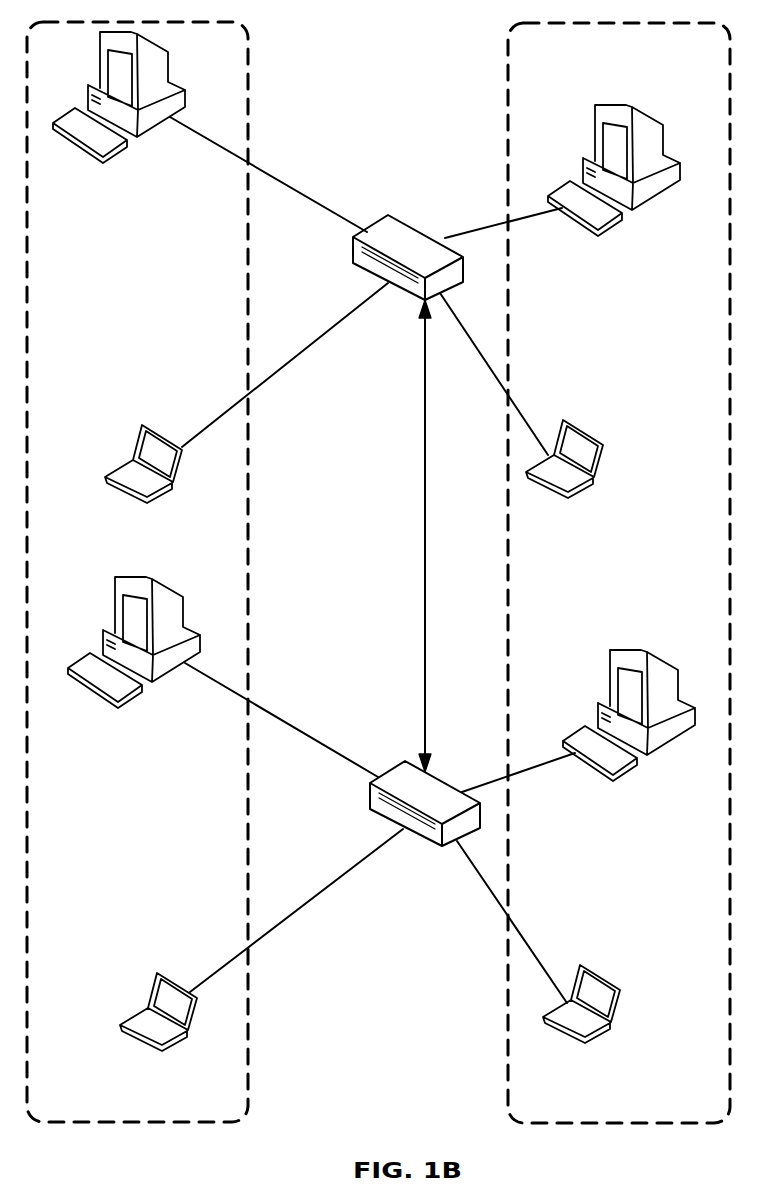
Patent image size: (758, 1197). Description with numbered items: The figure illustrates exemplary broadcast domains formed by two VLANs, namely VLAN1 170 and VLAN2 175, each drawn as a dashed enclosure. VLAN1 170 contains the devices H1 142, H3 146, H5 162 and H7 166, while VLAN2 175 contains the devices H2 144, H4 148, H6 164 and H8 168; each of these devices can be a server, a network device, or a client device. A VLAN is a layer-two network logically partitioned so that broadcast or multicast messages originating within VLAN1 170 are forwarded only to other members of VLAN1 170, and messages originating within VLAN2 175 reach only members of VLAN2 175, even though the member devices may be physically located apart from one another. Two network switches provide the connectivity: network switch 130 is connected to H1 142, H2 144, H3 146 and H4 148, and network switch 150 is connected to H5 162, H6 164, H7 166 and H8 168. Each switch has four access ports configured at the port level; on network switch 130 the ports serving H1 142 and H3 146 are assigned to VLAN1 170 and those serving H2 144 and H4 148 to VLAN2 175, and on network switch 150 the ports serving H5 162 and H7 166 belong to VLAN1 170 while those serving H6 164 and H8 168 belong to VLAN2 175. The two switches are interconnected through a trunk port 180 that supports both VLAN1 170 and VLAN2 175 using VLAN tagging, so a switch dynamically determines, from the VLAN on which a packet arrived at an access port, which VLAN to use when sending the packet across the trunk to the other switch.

The network switch 130 is at (321, 331).
The network switch 150 is at (324, 876).
The H1 142 is at (175, 199).
The H2 144 is at (650, 91).
The H3 146 is at (124, 457).
The H4 148 is at (650, 454).
The H5 162 is at (84, 639).
The H6 164 is at (668, 637).
The H7 166 is at (142, 992).
The H8 168 is at (572, 1082).
The VLAN1 170 is at (220, 1109).
The VLAN2 175 is at (702, 1104).
The trunk port 180 is at (390, 591).